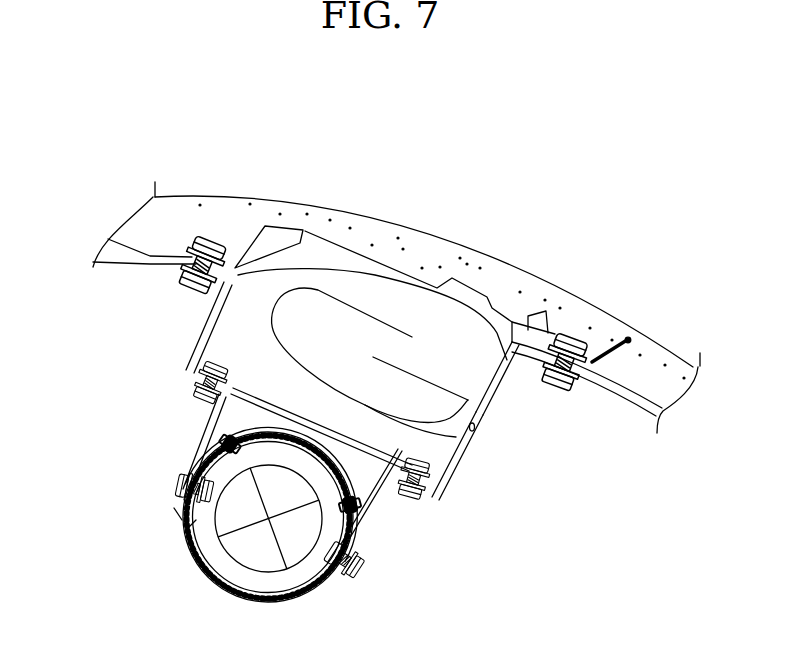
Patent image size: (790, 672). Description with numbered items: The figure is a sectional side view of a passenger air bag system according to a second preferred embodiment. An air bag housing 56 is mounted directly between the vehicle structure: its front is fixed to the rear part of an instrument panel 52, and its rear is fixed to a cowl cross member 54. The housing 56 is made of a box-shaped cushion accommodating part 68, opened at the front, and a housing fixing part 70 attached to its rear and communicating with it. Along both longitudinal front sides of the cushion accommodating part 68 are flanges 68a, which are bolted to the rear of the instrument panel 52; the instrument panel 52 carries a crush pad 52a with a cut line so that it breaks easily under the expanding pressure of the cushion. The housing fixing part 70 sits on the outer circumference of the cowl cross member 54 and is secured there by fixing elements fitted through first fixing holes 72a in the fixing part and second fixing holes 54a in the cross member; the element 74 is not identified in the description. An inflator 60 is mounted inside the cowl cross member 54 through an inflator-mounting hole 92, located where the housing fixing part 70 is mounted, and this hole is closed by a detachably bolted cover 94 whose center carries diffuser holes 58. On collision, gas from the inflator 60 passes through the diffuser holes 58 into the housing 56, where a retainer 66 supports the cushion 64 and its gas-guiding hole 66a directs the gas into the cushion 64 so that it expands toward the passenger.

The instrument panel 52 is at (228, 186).
The crush pad 52a is at (493, 267).
The cowl cross member 54 is at (246, 600).
The second fixing holes 54a is at (193, 525).
The air bag housing 56 is at (273, 394).
The diffuser holes 58 is at (276, 448).
The inflator 60 is at (303, 568).
The cushion 64 is at (480, 372).
The retainer 66 is at (478, 458).
The gas-guiding hole 66a is at (475, 427).
The cushion accommodating part 68 is at (193, 352).
The flanges 68a is at (180, 261).
The housing fixing part 70 is at (198, 448).
The first fixing holes 72a is at (180, 512).
The clamp bolt 74 is at (178, 507).
The inflator-mounting hole 92 is at (310, 447).
The cover 94 is at (257, 412).